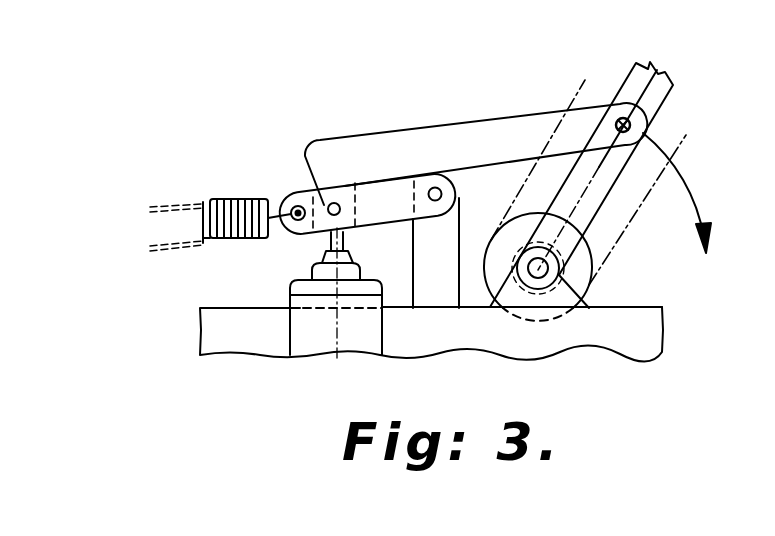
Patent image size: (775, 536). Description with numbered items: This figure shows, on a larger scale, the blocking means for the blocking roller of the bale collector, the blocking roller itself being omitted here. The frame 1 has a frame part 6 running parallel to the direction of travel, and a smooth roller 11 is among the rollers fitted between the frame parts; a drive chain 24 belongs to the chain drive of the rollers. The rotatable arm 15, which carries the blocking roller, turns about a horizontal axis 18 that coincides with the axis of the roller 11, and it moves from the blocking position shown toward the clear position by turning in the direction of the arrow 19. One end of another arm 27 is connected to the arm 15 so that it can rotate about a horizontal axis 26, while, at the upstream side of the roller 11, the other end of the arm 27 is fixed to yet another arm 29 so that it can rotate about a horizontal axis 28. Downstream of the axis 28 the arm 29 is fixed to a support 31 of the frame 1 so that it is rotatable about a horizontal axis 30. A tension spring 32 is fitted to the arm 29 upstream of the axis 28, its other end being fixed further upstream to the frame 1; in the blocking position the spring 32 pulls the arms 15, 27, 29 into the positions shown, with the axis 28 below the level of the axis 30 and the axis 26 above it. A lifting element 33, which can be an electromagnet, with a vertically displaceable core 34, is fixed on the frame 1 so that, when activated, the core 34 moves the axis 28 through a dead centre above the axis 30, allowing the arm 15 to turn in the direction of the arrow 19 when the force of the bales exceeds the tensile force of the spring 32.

The frame 1 is at (221, 357).
The frame part 6 is at (247, 342).
The smooth roller 11 is at (590, 261).
The rotatable arm 15 is at (665, 97).
The horizontal axis 18 is at (549, 259).
The arrow 19 is at (696, 193).
The drive chain 24 is at (553, 140).
The horizontal axis 26 is at (617, 122).
The arm 27 is at (409, 142).
The horizontal axis 28 is at (305, 160).
The arm 29 is at (384, 208).
The horizontal axis 30 is at (442, 193).
The support 31 is at (450, 289).
The tension spring 32 is at (212, 202).
The lifting element 33 is at (377, 336).
The core 34 is at (328, 246).